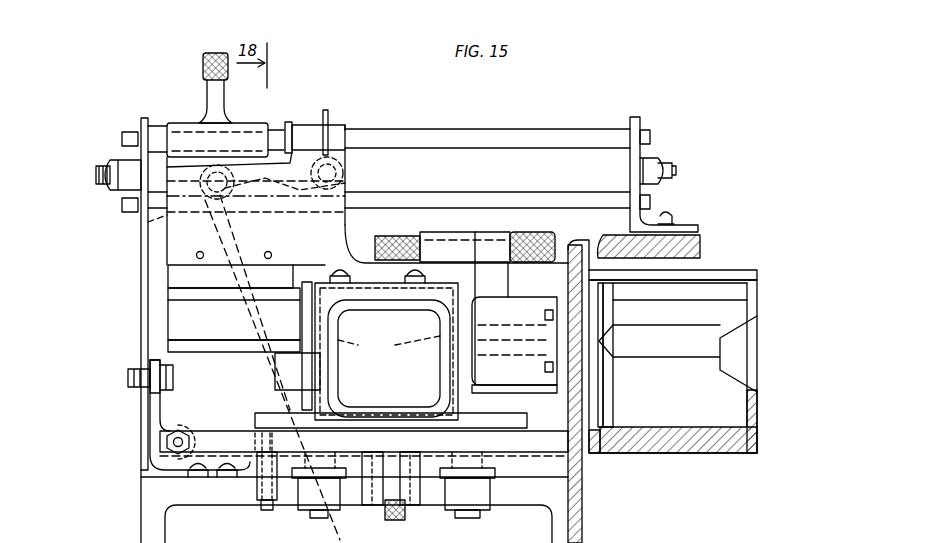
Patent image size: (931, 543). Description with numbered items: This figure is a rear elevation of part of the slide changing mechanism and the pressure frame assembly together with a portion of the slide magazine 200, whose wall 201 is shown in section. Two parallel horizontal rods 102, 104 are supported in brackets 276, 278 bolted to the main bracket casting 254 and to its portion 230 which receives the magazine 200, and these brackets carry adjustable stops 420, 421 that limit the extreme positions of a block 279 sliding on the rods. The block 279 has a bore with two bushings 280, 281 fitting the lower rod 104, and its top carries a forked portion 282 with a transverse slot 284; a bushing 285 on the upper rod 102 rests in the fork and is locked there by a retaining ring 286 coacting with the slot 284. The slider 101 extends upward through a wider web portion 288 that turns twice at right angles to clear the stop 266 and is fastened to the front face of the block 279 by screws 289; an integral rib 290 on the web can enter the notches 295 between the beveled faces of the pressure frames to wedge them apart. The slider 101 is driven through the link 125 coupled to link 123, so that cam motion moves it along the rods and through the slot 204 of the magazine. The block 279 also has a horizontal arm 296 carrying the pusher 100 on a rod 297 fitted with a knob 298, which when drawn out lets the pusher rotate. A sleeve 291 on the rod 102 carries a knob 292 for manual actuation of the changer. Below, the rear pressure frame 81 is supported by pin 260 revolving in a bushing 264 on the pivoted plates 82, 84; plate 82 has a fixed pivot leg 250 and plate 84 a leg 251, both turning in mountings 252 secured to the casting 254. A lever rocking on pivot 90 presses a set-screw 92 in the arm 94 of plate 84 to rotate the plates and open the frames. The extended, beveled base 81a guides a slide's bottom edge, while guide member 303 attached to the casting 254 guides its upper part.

The rear pressure frame 81 is at (336, 326).
The base extension of frame 81 81a is at (478, 420).
The pivoted plate 82 is at (500, 440).
The pivoted plate 84 is at (345, 430).
The pivot 90 is at (128, 379).
The set-screw 92 is at (182, 432).
The arm 94 is at (215, 433).
The pusher 100 is at (500, 292).
The slider 101 is at (282, 364).
The upper rod 102 is at (490, 129).
The lower rod 104 is at (500, 200).
The link 123 is at (262, 316).
The link 125 is at (285, 232).
The magazine 200 is at (756, 442).
The housing wall 201 is at (585, 462).
The slot 204 is at (718, 272).
The portion of main bracket 230 is at (700, 246).
The fixed pivot leg 250 is at (470, 516).
The pivot leg 251 is at (318, 518).
The mountings 252 is at (306, 508).
The main bracket casting 254 is at (195, 490).
The pin 260 is at (261, 503).
The bushing 264 is at (395, 510).
The stop 266 is at (316, 280).
The bracket 276 is at (141, 292).
The bracket 278 is at (648, 220).
The block 279 is at (352, 236).
The bushing 280 is at (150, 226).
The bushing 281 is at (340, 192).
The forked portion 282 is at (305, 125).
The transverse slot 284 is at (340, 135).
The bushing 285 is at (288, 122).
The retaining ring 286 is at (330, 110).
The web portion 288 is at (175, 310).
The screws 289 is at (266, 253).
The rib 290 is at (168, 346).
The sleeve 291 is at (195, 125).
The knob 292 is at (202, 67).
The notches 295 is at (389, 349).
The arm 296 is at (422, 238).
The rod 297 is at (460, 245).
The knob 298 is at (538, 232).
The guide member 303 is at (525, 372).
The adjustable stop 420 is at (676, 168).
The adjustable stop 421 is at (102, 172).